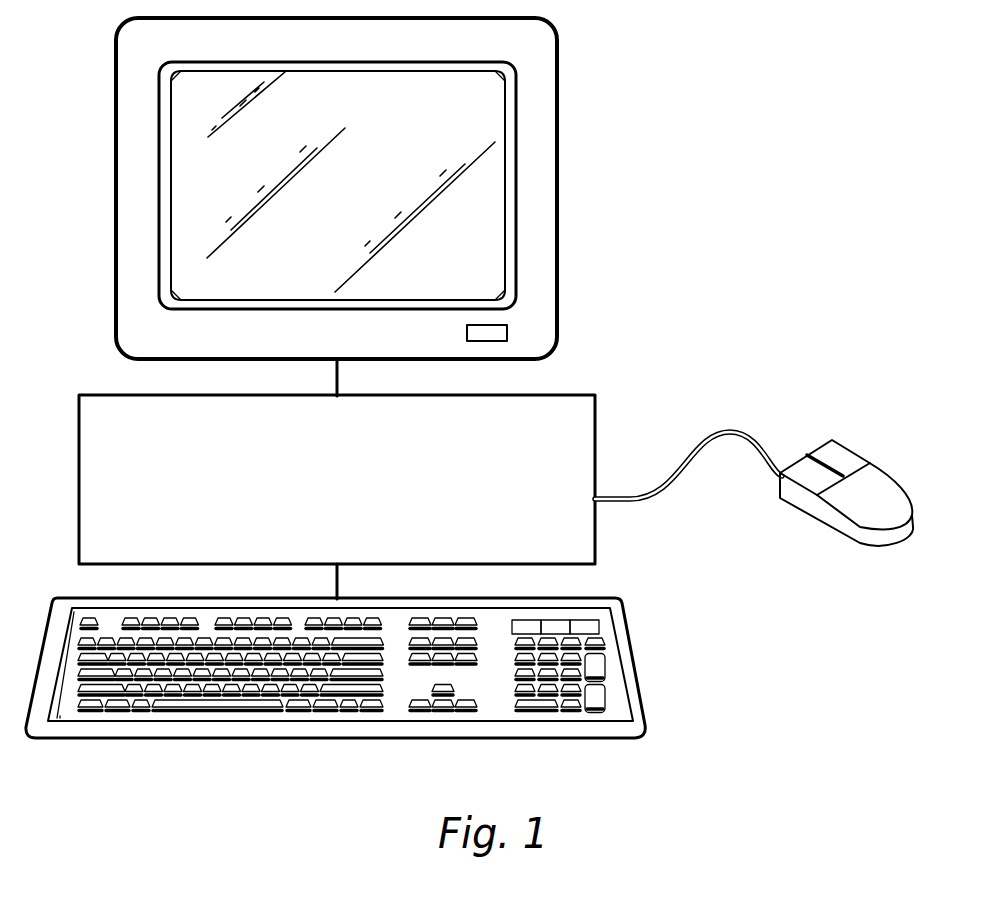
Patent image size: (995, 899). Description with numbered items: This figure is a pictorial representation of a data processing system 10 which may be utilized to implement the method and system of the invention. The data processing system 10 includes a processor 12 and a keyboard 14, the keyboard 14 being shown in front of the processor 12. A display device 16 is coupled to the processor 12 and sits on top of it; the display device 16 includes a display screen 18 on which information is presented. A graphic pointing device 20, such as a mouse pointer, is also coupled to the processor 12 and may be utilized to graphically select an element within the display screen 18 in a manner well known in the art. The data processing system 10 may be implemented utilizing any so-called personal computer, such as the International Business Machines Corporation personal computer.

The data processing system 10 is at (725, 320).
The processor 12 is at (595, 436).
The keyboard 14 is at (630, 646).
The display device 16 is at (558, 238).
The display screen 18 is at (500, 153).
The graphic pointing device 20 is at (813, 511).